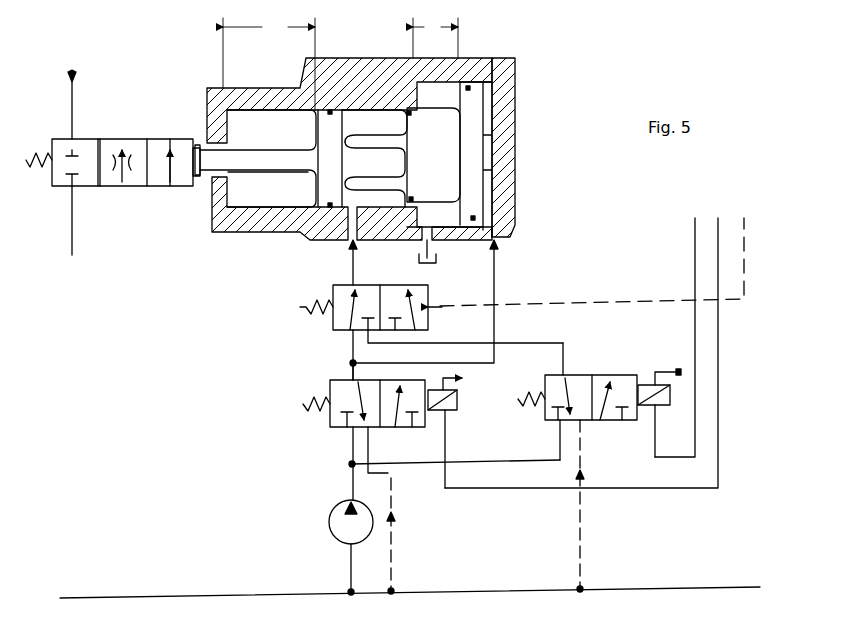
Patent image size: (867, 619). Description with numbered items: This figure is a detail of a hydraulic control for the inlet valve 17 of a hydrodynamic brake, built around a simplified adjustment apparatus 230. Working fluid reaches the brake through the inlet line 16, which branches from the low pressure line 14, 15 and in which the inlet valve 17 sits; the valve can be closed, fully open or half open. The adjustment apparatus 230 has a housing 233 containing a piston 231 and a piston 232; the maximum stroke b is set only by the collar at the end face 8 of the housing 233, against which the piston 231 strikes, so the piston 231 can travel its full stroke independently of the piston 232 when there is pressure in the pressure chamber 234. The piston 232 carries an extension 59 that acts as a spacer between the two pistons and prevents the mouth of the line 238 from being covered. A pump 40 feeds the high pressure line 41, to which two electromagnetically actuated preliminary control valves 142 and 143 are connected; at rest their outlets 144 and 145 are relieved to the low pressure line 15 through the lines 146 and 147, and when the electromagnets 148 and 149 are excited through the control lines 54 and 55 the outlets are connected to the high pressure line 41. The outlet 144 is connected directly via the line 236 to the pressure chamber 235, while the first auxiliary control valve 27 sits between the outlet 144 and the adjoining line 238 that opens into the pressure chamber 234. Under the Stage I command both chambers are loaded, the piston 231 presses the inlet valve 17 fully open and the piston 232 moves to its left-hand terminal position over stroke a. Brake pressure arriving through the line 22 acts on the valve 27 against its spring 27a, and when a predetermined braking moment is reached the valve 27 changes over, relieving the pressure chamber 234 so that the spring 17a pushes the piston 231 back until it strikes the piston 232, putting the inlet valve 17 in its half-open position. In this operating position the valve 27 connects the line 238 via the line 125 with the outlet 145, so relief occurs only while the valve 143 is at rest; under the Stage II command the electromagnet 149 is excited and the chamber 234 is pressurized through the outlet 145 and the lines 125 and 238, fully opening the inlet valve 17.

The end face 8 is at (229, 131).
The low pressure line 14 is at (80, 240).
The low pressure line 15 is at (130, 597).
The inlet line 16 is at (80, 103).
The inlet valve 17 is at (88, 178).
The spring 17a is at (45, 192).
The line 22 is at (616, 304).
The first auxiliary control valve 27 is at (330, 333).
The spring 27a is at (303, 312).
The pump 40 is at (339, 533).
The high pressure line 41 is at (375, 441).
The control line 54 is at (719, 328).
The control line 55 is at (694, 328).
The extension 59 is at (378, 168).
The line 125 is at (426, 343).
The preliminary control valve 142 is at (333, 427).
The preliminary control valve 143 is at (546, 422).
The outlet 144 is at (345, 372).
The outlet 145 is at (558, 357).
The line 146 is at (394, 556).
The line 147 is at (582, 556).
The electromagnet 148 is at (457, 412).
The electromagnet 149 is at (663, 413).
The adjustment apparatus 230 is at (240, 249).
The piston 231 is at (318, 184).
The piston 232 is at (472, 118).
The housing 233 is at (517, 240).
The pressure chamber 234 is at (378, 134).
The pressure chamber 235 is at (488, 193).
The line 236 is at (498, 322).
The line 238 is at (350, 262).